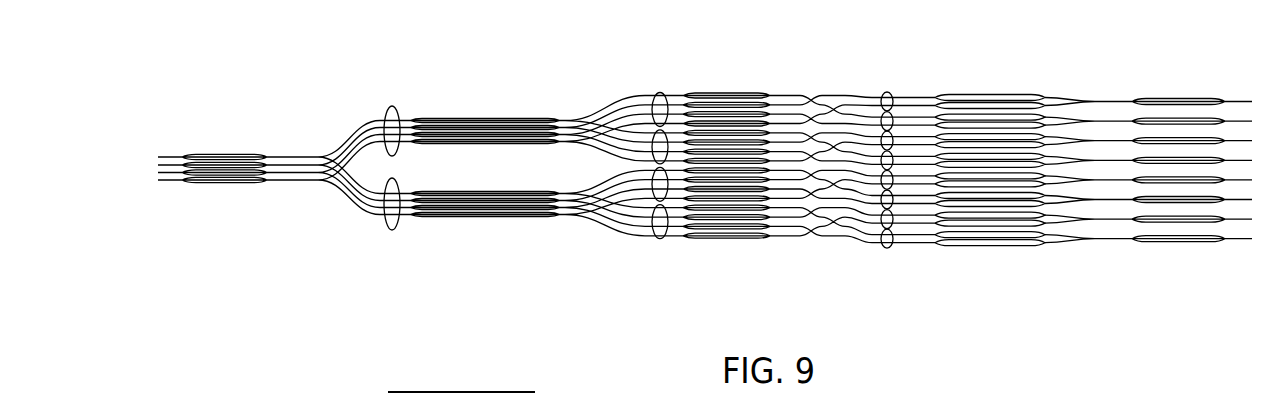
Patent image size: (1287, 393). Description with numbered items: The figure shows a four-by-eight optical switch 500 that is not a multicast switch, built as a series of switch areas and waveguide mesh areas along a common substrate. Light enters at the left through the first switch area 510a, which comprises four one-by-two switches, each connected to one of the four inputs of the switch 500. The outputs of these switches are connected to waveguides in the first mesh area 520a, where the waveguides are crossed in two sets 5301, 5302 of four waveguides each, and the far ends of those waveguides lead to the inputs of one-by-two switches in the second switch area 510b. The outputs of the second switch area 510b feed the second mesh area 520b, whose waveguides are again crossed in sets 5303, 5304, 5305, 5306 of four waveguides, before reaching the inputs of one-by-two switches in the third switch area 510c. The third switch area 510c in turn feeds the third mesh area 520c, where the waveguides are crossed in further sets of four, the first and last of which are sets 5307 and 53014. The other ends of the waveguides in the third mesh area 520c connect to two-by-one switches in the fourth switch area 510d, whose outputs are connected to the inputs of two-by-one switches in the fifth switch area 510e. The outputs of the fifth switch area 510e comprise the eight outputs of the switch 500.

The 4×8 optical switch 500 is at (705, 169).
The first switch area 510a is at (239, 207).
The second switch area 510b is at (471, 240).
The third switch area 510c is at (731, 255).
The fourth switch area 510d is at (999, 255).
The fifth switch area 510e is at (1148, 208).
The first mesh area 520a is at (392, 243).
The second mesh area 520b is at (601, 243).
The third mesh area 520c is at (854, 255).
The set of crossed waveguides 5301 is at (392, 106).
The set of crossed waveguides 5302 is at (400, 192).
The set of crossed waveguides 5303 is at (660, 95).
The set of crossed waveguides 5304 is at (655, 140).
The set of crossed waveguides 5305 is at (655, 183).
The set of crossed waveguides 5306 is at (661, 240).
The set of crossed waveguides 5307 is at (887, 93).
The set of crossed waveguides 53014 is at (887, 249).